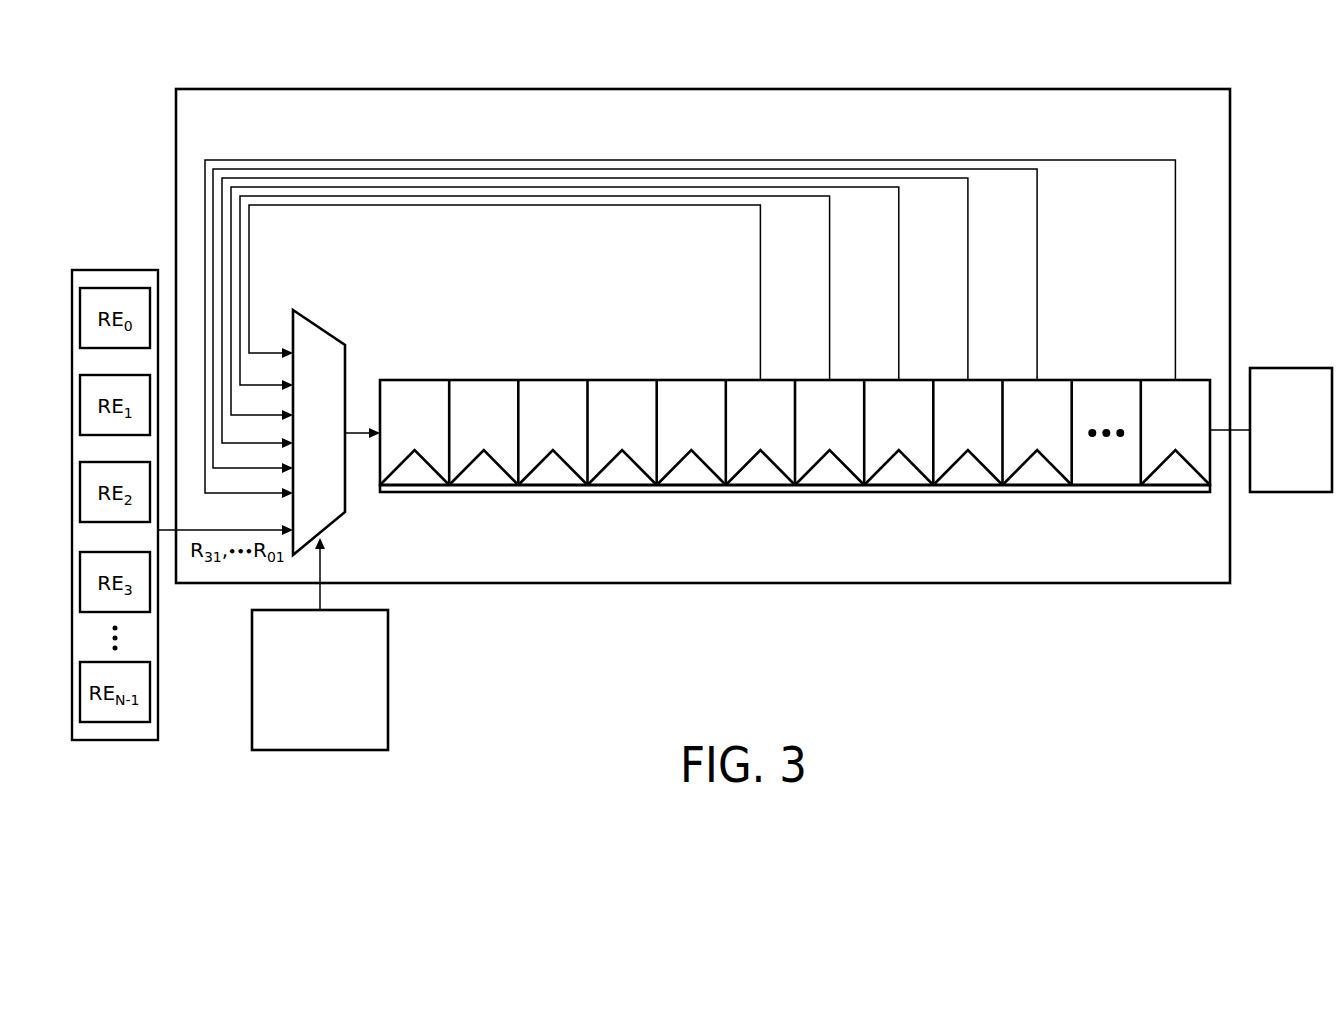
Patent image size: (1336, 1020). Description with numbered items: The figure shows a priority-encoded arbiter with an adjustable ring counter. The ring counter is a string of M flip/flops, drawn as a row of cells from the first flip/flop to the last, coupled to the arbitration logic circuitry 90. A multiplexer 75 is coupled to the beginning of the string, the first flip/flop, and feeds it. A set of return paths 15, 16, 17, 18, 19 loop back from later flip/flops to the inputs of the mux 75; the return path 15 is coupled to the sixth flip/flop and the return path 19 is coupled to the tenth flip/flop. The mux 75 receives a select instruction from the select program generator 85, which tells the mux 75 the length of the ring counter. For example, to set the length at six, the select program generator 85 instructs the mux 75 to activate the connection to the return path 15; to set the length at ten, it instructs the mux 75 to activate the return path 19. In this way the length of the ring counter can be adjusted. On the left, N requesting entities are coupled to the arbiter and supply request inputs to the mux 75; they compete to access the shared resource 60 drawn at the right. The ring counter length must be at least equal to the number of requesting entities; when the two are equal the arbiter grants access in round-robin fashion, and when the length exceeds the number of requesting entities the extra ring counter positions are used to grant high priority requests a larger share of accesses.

The shared resource 60 is at (1305, 377).
The multiplexer 75 is at (337, 512).
The select program generator 85 is at (375, 733).
The arbitration logic circuitry 90 is at (1163, 493).
The return path 15 is at (511, 292).
The return path 16 is at (542, 293).
The return path 17 is at (572, 303).
The return path 18 is at (602, 313).
The return path 19 is at (632, 321).